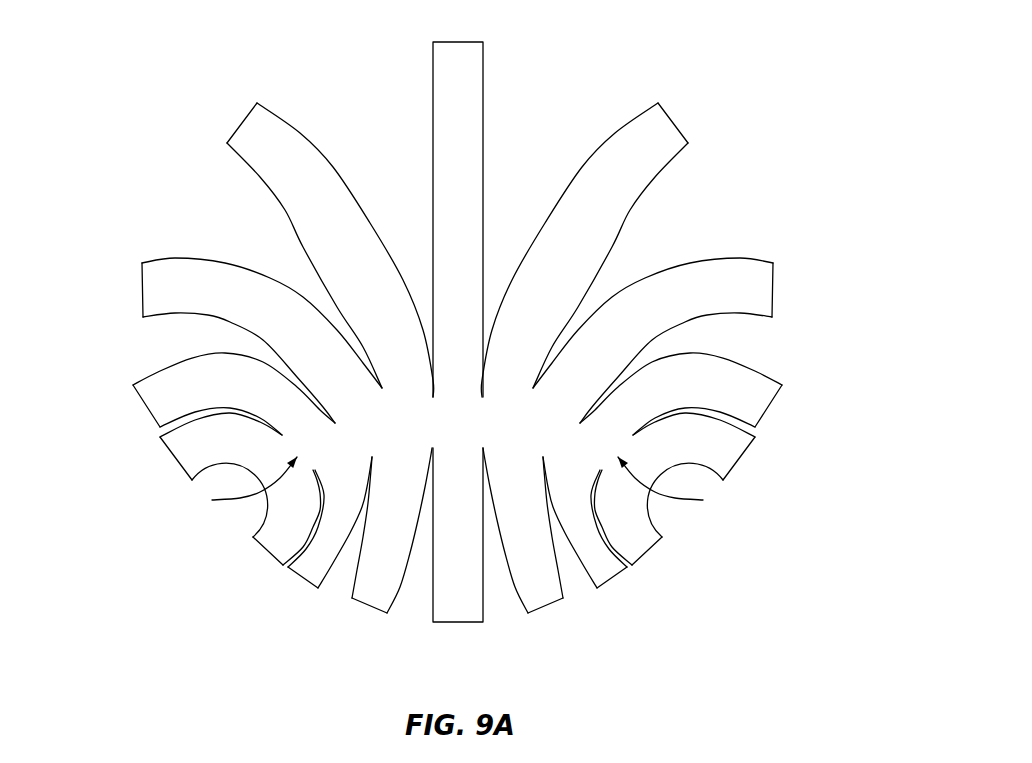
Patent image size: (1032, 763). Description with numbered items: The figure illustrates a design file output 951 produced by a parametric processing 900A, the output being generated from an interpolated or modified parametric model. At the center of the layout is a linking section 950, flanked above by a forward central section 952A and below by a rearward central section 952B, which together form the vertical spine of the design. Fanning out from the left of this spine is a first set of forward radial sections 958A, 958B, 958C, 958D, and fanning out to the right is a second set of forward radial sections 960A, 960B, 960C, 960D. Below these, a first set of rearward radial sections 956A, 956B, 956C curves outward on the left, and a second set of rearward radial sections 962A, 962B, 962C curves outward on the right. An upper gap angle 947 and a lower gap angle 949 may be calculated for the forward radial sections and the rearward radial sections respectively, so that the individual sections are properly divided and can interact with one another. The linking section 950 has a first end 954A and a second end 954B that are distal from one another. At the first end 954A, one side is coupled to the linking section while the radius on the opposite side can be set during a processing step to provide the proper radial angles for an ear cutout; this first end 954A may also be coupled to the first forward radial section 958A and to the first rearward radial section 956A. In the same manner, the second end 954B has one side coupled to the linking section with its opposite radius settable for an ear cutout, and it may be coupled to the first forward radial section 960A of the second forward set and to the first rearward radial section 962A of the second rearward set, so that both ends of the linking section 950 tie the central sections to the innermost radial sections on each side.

The parametric processing 900A is at (797, 58).
The upper gap angle 947 is at (535, 148).
The lower gap angle 949 is at (765, 425).
The linking section 950 is at (481, 436).
The design file output 951 is at (222, 30).
The forward central section 952A is at (433, 32).
The rearward central section 952B is at (458, 628).
The first end 954A is at (227, 488).
The second end 954B is at (688, 488).
The first rearward radial section 956A is at (268, 543).
The rearward radial section 956B is at (307, 567).
The rearward radial section 956C is at (372, 592).
The first forward radial section 958A is at (190, 450).
The forward radial section 958B is at (158, 383).
The forward radial section 958C is at (150, 278).
The forward radial section 958D is at (255, 127).
The first forward radial section 960A is at (622, 246).
The forward radial section 960B is at (765, 278).
The forward radial section 960C is at (712, 392).
The forward radial section 960D is at (725, 452).
The first rearward radial section 962A is at (663, 526).
The rearward radial section 962B is at (600, 550).
The rearward radial section 962C is at (538, 561).